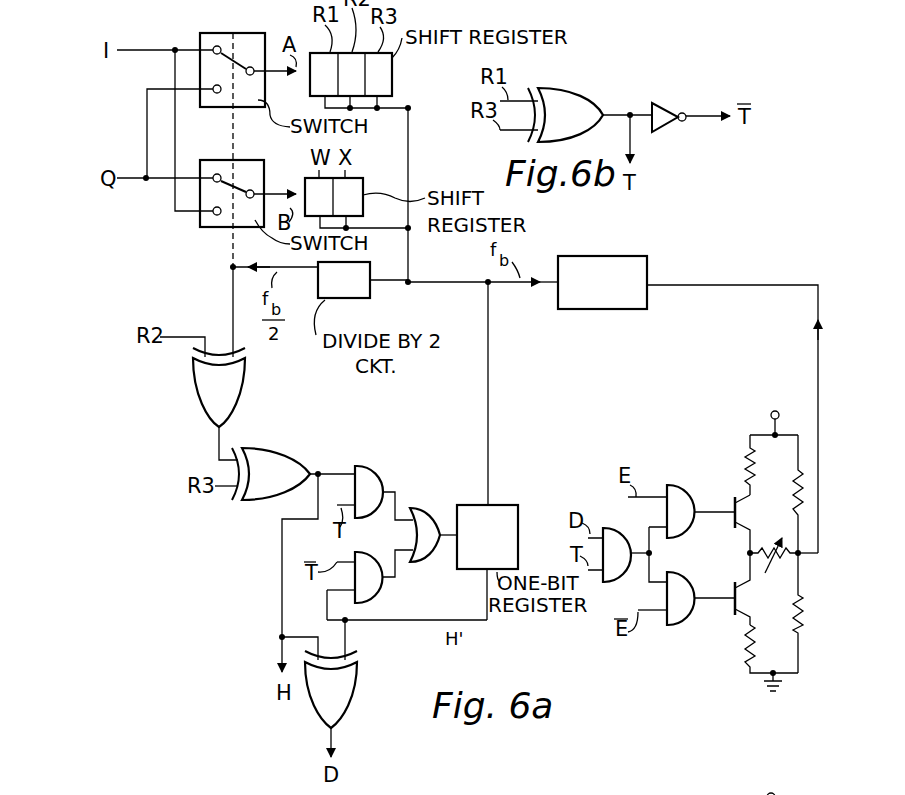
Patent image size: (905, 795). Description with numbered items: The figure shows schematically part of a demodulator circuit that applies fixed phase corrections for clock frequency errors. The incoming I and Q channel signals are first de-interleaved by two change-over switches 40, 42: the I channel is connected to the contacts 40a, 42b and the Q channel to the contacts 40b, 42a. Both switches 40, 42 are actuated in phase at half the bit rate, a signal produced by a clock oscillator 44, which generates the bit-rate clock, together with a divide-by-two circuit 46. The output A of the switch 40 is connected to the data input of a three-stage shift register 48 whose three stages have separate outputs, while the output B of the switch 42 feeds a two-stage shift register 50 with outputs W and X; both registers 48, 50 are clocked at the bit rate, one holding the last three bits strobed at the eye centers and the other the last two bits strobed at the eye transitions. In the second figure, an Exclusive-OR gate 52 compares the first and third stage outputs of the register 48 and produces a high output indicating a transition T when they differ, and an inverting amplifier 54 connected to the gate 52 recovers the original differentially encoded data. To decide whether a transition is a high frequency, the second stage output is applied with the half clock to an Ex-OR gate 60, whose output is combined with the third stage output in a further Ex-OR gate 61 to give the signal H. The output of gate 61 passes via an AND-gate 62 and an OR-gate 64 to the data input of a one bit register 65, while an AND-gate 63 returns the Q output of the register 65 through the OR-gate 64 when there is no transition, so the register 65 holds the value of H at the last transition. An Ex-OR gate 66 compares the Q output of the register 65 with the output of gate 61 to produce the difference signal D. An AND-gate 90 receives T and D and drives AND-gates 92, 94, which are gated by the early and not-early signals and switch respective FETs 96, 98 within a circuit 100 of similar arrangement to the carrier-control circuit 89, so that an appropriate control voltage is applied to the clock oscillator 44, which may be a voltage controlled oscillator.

In FIG. 6A, the change-over switch 40 is at (242, 38).
In FIG. 6A, the contact 40a is at (213, 45).
In FIG. 6A, the contact 40b is at (217, 94).
In FIG. 6A, the change-over switch 42 is at (253, 167).
In FIG. 6A, the contact 42a is at (217, 173).
In FIG. 6A, the contact 42b is at (217, 216).
In FIG. 6A, the clock oscillator 44 is at (630, 258).
In FIG. 6A, the divide-by-two circuit 46 is at (345, 300).
In FIG. 6A, the three-stage shift register 48 is at (392, 74).
In FIG. 6A, the two-stage shift register 50 is at (357, 186).
In FIG. 6B, the Exclusive-OR gate 52 is at (572, 96).
In FIG. 6B, the inverting amplifier 54 is at (665, 101).
In FIG. 6A, the Exclusive-OR gate 60 is at (193, 384).
In FIG. 6A, the Exclusive-OR gate 61 is at (278, 460).
In FIG. 6A, the AND-gate 62 is at (372, 474).
In FIG. 6A, the AND-gate 63 is at (374, 598).
In FIG. 6A, the OR-gate 64 is at (425, 512).
In FIG. 6A, the one bit register 65 is at (511, 510).
In FIG. 6A, the Exclusive-OR gate 66 is at (350, 693).
In FIG. 6A, the circuit 89 is at (742, 794).
In FIG. 6A, the AND-gate 90 is at (621, 536).
In FIG. 6A, the AND-gate 92 is at (686, 506).
In FIG. 6A, the AND-gate 94 is at (686, 592).
In FIG. 6A, the FET 96 is at (752, 507).
In FIG. 6A, the FET 98 is at (752, 595).
In FIG. 6A, the circuit 100 is at (749, 417).